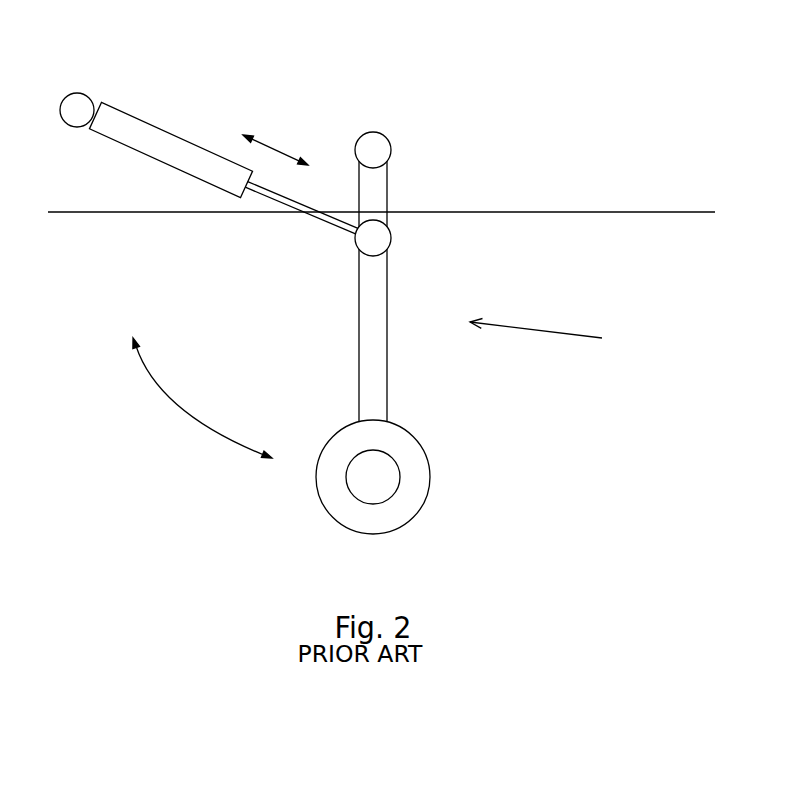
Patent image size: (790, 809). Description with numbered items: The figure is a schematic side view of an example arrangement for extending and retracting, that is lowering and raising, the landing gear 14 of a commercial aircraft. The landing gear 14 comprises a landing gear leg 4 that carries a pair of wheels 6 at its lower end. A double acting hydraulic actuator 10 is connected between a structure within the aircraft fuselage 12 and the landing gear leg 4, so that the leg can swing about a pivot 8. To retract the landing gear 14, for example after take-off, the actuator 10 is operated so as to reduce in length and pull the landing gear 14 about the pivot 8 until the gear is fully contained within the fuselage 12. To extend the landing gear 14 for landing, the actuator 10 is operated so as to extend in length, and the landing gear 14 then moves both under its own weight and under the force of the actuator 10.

The landing gear leg 4 is at (387, 373).
The pair of wheels 6 is at (428, 476).
The pivot 8 is at (385, 135).
The double acting hydraulic actuator 10 is at (177, 135).
The aircraft fuselage 12 is at (523, 192).
The landing gear 14 is at (560, 338).